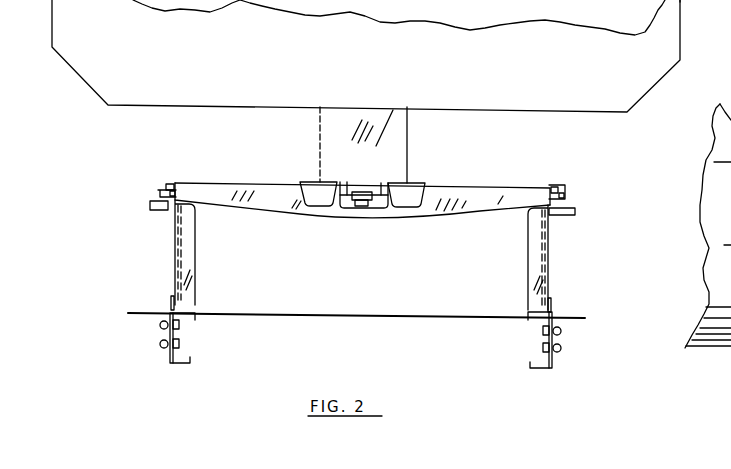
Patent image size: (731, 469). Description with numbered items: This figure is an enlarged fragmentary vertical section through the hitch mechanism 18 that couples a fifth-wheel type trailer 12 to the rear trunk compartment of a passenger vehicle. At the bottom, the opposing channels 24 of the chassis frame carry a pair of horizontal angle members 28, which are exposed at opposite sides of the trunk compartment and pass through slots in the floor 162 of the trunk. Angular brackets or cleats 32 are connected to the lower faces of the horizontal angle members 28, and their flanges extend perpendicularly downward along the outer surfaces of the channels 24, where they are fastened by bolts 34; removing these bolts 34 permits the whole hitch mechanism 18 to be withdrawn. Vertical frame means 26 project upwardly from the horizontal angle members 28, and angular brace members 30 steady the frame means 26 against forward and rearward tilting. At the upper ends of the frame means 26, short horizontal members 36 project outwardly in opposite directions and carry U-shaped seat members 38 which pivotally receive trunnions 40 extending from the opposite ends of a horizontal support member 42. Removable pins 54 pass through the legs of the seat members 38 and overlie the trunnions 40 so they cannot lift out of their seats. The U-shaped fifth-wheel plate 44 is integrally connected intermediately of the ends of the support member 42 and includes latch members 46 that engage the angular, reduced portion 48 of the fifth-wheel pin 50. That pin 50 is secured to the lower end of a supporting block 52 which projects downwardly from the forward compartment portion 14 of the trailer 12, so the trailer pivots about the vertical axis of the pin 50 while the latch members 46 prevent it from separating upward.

The trailer 12 is at (682, 50).
The forward compartment portion 14 is at (105, 88).
The hitch mechanism 18 is at (498, 186).
The channels 24 is at (178, 367).
The frame means 26 is at (193, 257).
The horizontal angle members 28 is at (172, 298).
The angular brace members 30 is at (182, 235).
The brackets 32 is at (163, 328).
The bolts 34 is at (162, 344).
The short horizontal members 36 is at (153, 203).
The U-shaped seat members 38 is at (168, 186).
The trunnions 40 is at (167, 191).
The horizontal support member 42 is at (270, 193).
The fifth-wheel plate 44 is at (420, 184).
The latch members 46 is at (350, 192).
The reduced portion 48 is at (370, 200).
The fifth-wheel pin 50 is at (360, 203).
The supporting block 52 is at (400, 132).
The removable pins 54 is at (176, 186).
The floor 162 is at (381, 313).